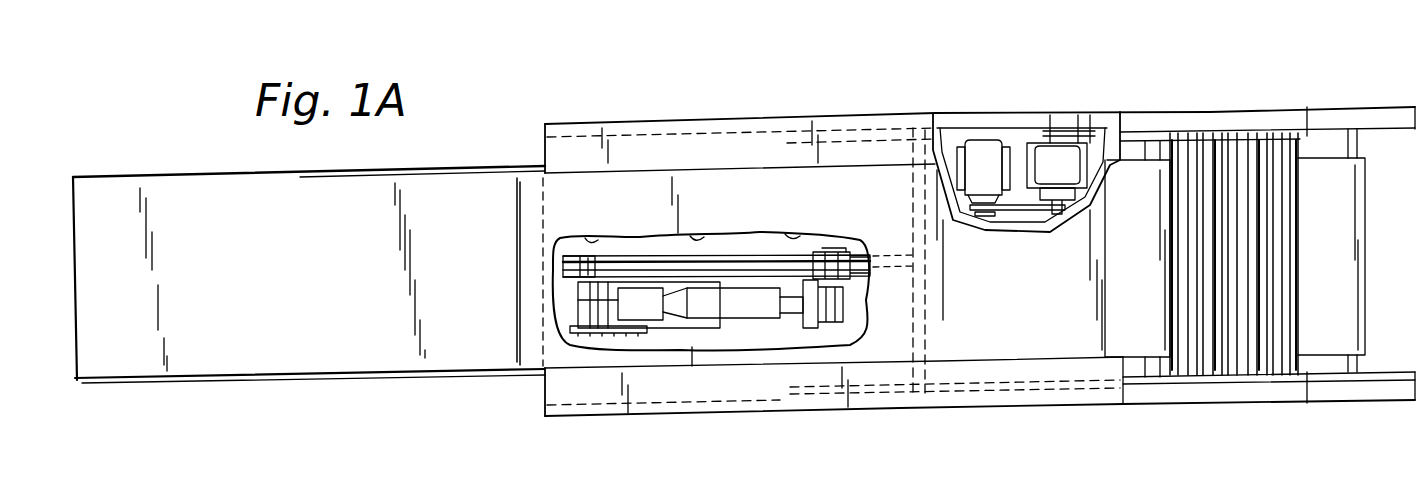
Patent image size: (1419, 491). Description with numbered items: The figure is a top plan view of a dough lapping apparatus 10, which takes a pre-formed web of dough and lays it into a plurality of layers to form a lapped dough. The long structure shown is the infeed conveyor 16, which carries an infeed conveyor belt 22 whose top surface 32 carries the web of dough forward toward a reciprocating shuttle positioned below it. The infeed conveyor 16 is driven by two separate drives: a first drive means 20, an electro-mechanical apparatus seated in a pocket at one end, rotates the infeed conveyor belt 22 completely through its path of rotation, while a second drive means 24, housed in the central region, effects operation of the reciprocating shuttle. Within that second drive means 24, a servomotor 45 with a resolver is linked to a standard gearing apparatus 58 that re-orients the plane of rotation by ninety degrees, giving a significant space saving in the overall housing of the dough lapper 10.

The dough lapping apparatus 10 is at (950, 85).
The infeed conveyor 16 is at (420, 168).
The first drive means 20 is at (1013, 216).
The infeed conveyor belt 22 is at (358, 353).
The second drive means 24 is at (633, 256).
The top surface 32 is at (300, 276).
The servomotor 45 is at (756, 305).
The gearing apparatus 58 is at (655, 316).